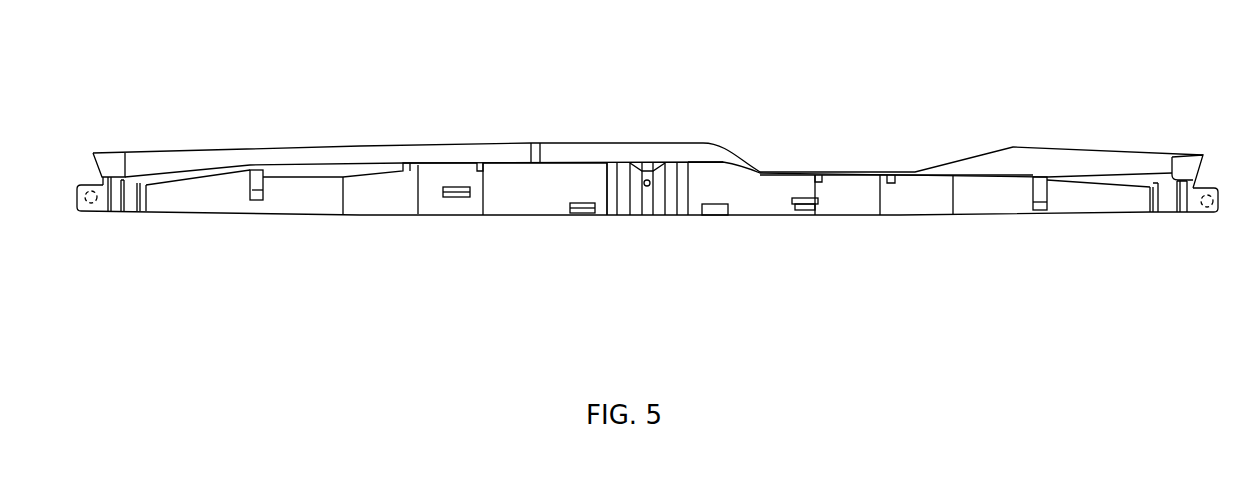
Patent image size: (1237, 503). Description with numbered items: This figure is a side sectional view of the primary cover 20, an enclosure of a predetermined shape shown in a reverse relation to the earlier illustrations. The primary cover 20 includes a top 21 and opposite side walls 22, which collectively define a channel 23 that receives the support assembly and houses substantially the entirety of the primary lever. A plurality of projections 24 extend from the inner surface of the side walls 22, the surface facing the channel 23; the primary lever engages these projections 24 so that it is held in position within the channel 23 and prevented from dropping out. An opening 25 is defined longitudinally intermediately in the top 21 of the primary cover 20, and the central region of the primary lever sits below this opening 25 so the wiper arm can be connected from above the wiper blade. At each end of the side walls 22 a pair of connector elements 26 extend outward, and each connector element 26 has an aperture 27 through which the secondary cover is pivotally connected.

The primary cover 20 is at (784, 140).
The top 21 is at (483, 143).
The side walls 22 is at (760, 200).
The channel 23 is at (543, 189).
The projections 24 is at (252, 212).
The opening 25 is at (605, 147).
The connector elements 26 is at (82, 180).
The aperture 27 is at (97, 212).